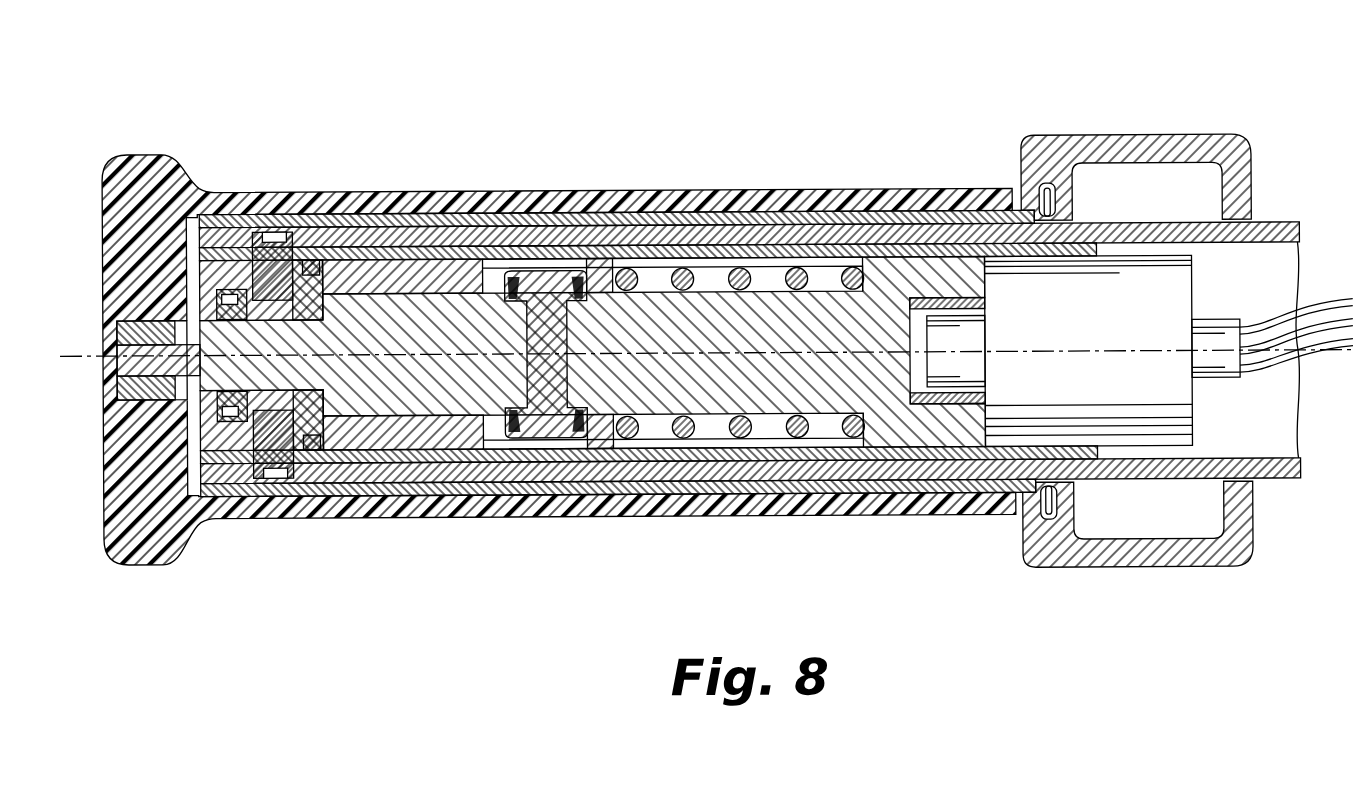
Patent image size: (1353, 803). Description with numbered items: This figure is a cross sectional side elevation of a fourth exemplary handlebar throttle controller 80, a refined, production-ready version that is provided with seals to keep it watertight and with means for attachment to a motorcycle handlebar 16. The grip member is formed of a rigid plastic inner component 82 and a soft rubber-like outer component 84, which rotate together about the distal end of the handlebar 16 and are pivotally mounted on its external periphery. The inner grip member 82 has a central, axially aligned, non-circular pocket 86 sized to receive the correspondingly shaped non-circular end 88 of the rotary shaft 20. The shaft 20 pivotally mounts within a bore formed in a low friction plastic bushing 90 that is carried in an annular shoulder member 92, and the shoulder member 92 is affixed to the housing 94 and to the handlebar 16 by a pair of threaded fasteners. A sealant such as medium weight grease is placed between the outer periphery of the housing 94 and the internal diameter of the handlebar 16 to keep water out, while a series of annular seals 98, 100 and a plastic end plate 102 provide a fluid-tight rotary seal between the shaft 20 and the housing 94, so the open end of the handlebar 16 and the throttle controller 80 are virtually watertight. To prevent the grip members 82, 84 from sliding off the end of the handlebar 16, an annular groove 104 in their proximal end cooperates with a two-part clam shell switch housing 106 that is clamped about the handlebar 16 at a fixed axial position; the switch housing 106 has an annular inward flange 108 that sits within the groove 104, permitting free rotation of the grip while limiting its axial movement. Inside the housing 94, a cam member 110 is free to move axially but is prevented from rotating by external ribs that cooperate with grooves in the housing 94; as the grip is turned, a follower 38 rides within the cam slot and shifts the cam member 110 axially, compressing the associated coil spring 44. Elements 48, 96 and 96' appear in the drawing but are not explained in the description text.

The handlebar 16 is at (1277, 222).
The rotary shaft 20 is at (362, 318).
The follower 38 is at (470, 270).
The coil spring 44 is at (717, 440).
The connector block 48 is at (1027, 275).
The throttle controller 80 is at (689, 70).
The rigid plastic inner component 82 is at (560, 500).
The soft rubber-like outer component 84 is at (598, 490).
The non-circular pocket 86 is at (117, 392).
The non-circular end 88 is at (117, 318).
The low friction plastic bushing 90 is at (303, 258).
The annular shoulder member 92 is at (230, 290).
The housing 94 is at (538, 262).
The bolt 96 is at (265, 177).
The bolt 96' is at (298, 523).
The annular seal 98 is at (318, 480).
The annular seal 100 is at (255, 470).
The plastic end plate 102 is at (235, 445).
The annular groove 104 is at (1020, 520).
The two-part clam shell switch housing 106 is at (1143, 569).
The inward flange 108 is at (1020, 182).
The cam member 110 is at (416, 256).